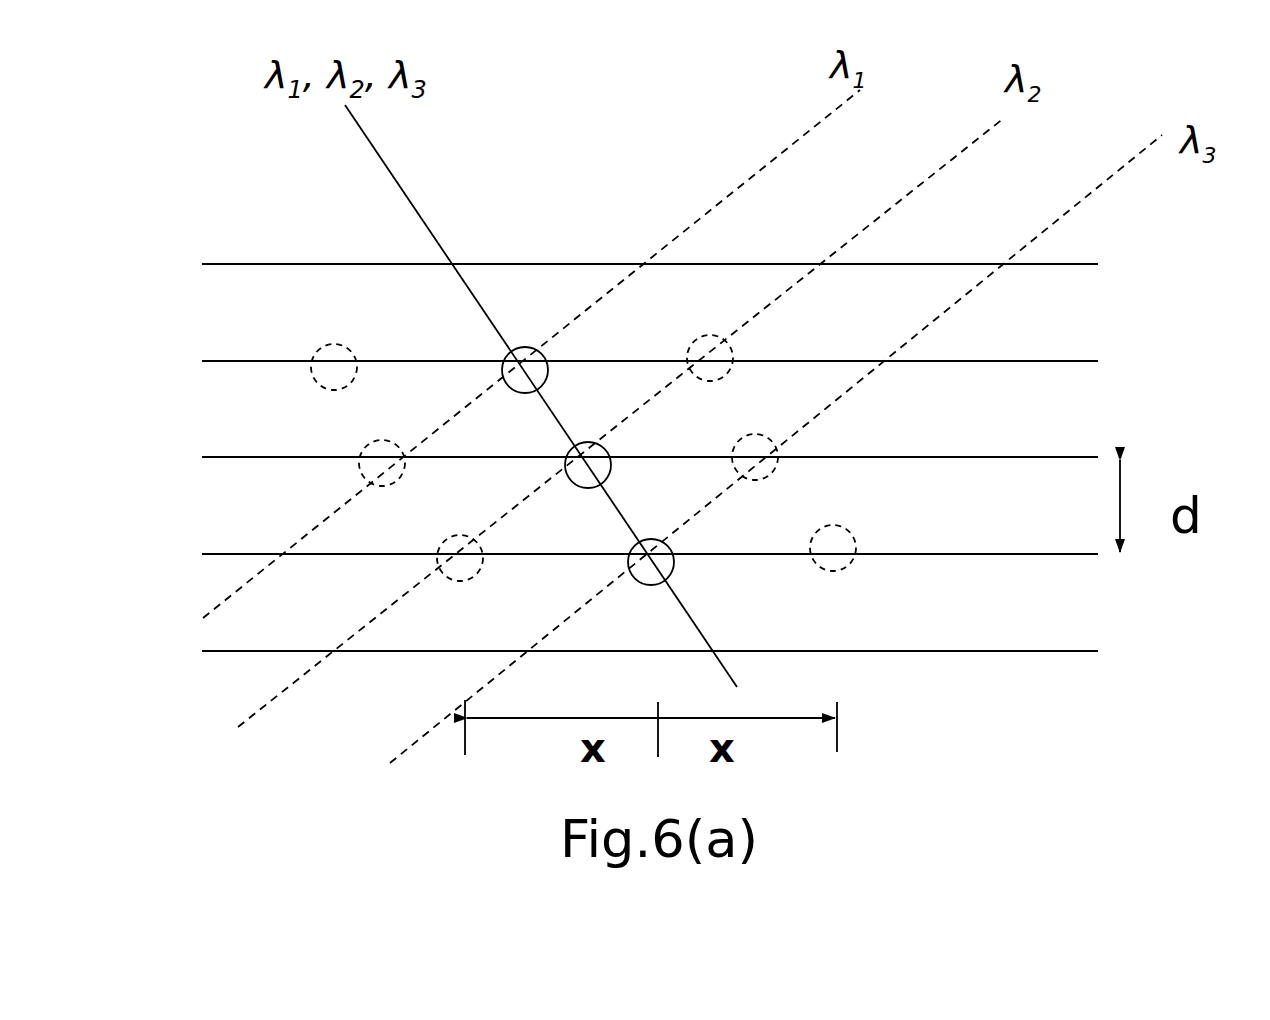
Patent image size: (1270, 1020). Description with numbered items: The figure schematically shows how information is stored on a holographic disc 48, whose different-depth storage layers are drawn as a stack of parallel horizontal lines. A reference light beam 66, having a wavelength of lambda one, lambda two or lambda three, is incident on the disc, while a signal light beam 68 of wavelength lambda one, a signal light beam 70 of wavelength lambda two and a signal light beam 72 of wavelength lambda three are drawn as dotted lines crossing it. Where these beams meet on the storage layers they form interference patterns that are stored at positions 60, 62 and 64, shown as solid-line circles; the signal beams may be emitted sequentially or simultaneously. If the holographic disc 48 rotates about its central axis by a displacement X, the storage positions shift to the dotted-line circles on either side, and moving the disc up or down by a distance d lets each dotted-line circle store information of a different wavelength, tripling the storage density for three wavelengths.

The holographic disc 48 is at (231, 652).
The position 60 is at (673, 563).
The position 62 is at (607, 447).
The position 64 is at (547, 353).
The reference light beam 66 is at (410, 205).
The signal light beam 68 is at (805, 128).
The signal light beam 70 is at (955, 155).
The signal light beam 72 is at (1043, 233).